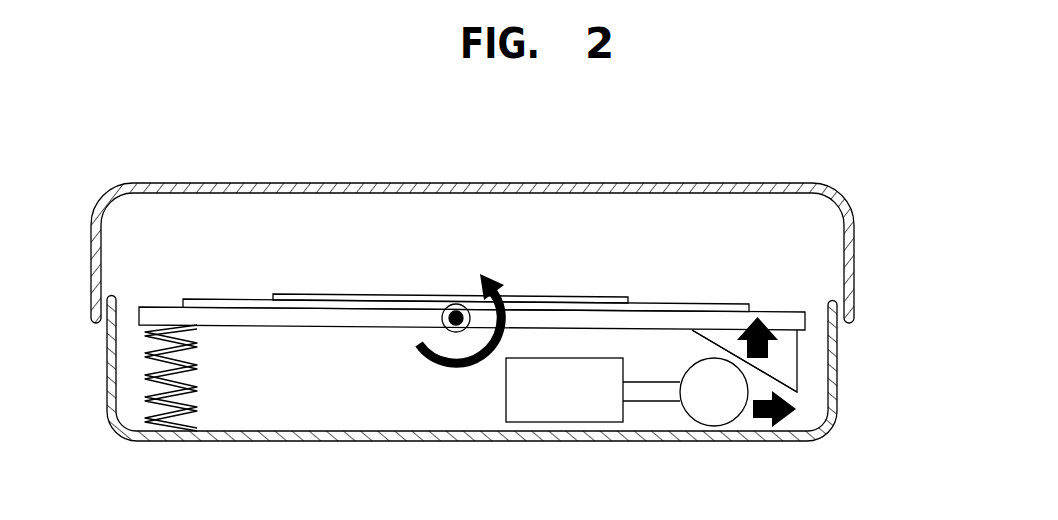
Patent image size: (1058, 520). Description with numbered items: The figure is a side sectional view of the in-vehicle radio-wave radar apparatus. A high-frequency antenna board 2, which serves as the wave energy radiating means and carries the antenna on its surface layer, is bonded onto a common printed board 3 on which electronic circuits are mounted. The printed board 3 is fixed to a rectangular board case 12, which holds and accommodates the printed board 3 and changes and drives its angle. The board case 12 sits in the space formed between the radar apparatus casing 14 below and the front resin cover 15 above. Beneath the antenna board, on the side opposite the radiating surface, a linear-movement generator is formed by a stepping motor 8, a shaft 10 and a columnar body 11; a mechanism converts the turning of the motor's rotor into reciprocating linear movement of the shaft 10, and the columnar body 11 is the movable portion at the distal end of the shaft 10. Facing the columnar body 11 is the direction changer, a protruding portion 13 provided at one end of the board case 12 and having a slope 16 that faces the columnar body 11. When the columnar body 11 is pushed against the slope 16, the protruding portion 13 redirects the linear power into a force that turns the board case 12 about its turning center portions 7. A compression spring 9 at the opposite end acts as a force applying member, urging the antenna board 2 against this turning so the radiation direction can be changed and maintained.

The high-frequency antenna board 2 is at (617, 295).
The printed board 3 is at (683, 305).
The turning center portions 7 is at (456, 310).
The stepping motor 8 is at (538, 410).
The compression spring 9 is at (193, 390).
The shaft 10 is at (643, 395).
The columnar body 11 is at (715, 412).
The board case 12 is at (788, 318).
The protruding portion 13 is at (787, 367).
The radar apparatus casing 14 is at (812, 437).
The front resin cover 15 is at (853, 258).
The slope 16 is at (703, 345).